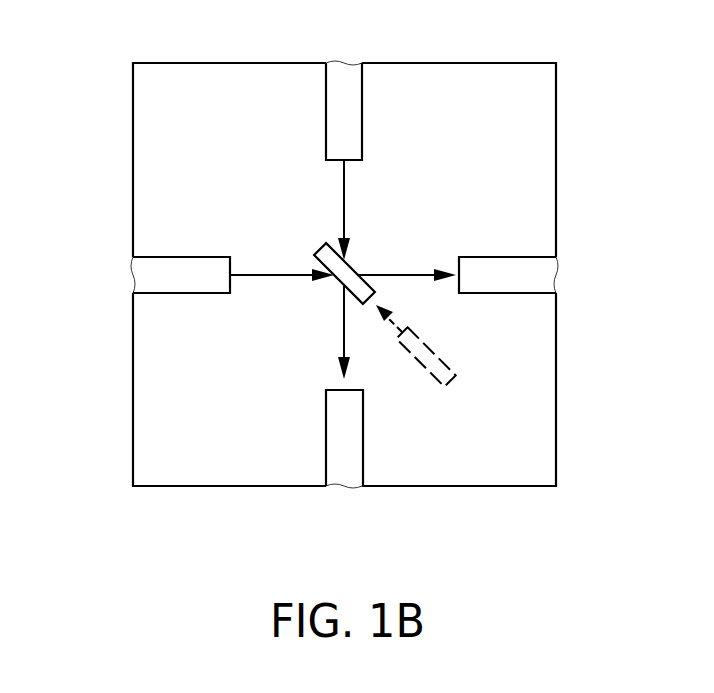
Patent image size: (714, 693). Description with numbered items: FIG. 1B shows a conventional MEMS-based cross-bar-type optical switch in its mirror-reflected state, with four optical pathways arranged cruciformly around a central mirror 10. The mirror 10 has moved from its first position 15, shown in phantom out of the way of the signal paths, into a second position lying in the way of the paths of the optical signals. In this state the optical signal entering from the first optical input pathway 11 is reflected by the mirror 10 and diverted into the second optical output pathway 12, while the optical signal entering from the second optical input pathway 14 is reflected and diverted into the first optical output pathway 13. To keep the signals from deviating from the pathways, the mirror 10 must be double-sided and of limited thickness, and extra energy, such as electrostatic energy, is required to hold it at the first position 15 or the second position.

The mirror 10 is at (351, 263).
The first optical input pathway 11 is at (133, 275).
The second optical output pathway 12 is at (345, 486).
The first optical output pathway 13 is at (556, 275).
The second optical input pathway 14 is at (342, 63).
The first position 15 is at (456, 375).